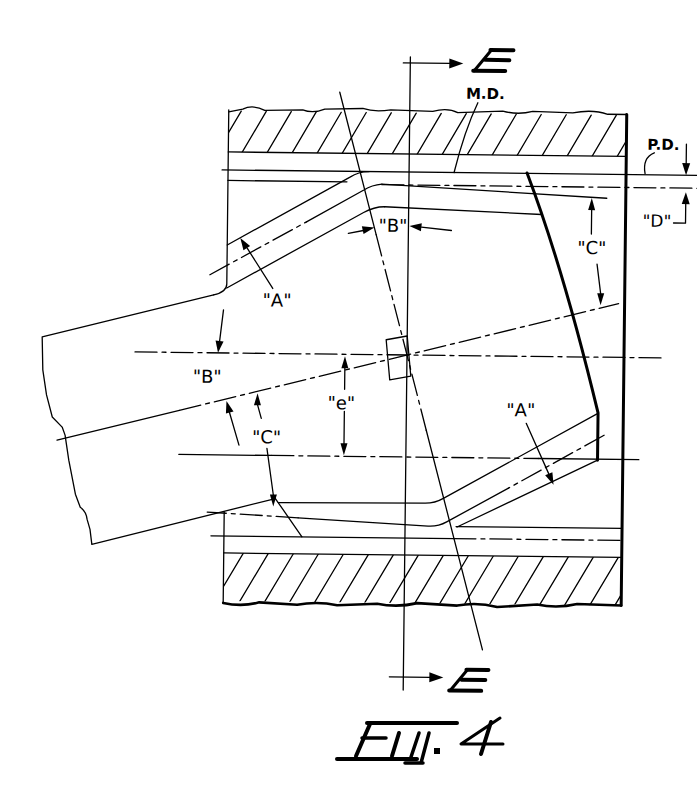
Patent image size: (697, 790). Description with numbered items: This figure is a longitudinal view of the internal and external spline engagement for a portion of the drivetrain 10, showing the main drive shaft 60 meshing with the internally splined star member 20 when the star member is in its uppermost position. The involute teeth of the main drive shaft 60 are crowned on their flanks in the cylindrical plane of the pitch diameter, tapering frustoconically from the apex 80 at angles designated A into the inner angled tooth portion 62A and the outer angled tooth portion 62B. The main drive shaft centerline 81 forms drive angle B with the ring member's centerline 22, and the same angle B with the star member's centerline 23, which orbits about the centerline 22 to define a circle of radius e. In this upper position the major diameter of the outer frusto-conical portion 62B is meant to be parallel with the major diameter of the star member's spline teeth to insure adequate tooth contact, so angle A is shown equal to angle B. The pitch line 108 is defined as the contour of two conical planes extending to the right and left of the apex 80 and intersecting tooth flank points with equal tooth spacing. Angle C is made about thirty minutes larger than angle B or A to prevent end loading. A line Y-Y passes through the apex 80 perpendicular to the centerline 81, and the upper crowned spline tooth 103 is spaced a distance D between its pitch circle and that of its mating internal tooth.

The threading apparatus 10 is at (688, 333).
The star member 20 is at (555, 103).
The ring member's centerline 22 is at (189, 458).
The star member's centerline 23 is at (150, 353).
The main drive shaft 60 is at (155, 499).
The inner angled tooth portion 62A is at (302, 497).
The outer angled tooth portion 62B is at (487, 219).
The apex 80 is at (360, 172).
The main drive shaft centerline 81 is at (180, 415).
The upper crowned spline tooth 103 is at (444, 192).
The pitch line 108 is at (601, 196).